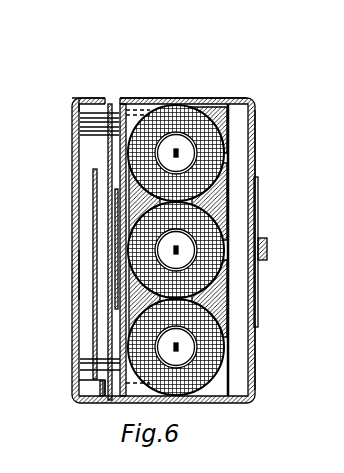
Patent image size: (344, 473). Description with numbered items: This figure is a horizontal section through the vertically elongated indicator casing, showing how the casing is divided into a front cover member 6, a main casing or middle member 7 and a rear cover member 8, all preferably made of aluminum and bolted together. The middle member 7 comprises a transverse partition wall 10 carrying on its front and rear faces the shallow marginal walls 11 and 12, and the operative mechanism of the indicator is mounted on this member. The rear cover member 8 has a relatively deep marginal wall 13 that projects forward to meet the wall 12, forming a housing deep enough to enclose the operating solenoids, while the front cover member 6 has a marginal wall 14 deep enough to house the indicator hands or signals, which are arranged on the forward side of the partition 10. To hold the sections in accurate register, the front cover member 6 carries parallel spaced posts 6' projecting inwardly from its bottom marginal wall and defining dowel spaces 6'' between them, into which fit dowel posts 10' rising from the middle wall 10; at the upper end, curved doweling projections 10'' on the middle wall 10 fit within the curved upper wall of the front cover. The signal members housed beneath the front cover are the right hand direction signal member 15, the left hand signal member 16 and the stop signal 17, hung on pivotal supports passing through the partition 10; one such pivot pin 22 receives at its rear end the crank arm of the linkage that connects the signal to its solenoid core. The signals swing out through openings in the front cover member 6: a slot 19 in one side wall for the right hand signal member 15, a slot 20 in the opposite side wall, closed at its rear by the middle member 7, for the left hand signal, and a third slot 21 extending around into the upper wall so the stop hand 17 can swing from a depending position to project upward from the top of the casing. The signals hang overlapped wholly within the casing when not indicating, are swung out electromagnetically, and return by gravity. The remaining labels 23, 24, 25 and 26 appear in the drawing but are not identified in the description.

The front cover member 6 is at (145, 249).
The parallel spaced posts 6' is at (72, 346).
The dowel spaces 6'' is at (72, 360).
The main casing or middle member 7 is at (127, 100).
The rear cover member 8 is at (256, 134).
The transverse partition wall 10 is at (79, 124).
The dowel posts 10' is at (91, 420).
The curved doweling projections 10'' is at (174, 245).
The shallow marginal wall 11 is at (109, 103).
The shallow marginal wall 12 is at (131, 104).
The deep marginal wall 13 is at (223, 99).
The marginal wall 14 is at (104, 97).
The right hand direction signal member 15 is at (75, 104).
The left hand signal member 16 is at (108, 226).
The stop signal 17 is at (79, 272).
The slot 19 is at (123, 99).
The slot 20 is at (106, 404).
The third slot 21 is at (90, 400).
The pivot pin 22 is at (229, 172).
The roller 23 is at (229, 346).
The roller 24 is at (229, 272).
The roller hub 25 is at (200, 160).
The spacer 26 is at (186, 222).